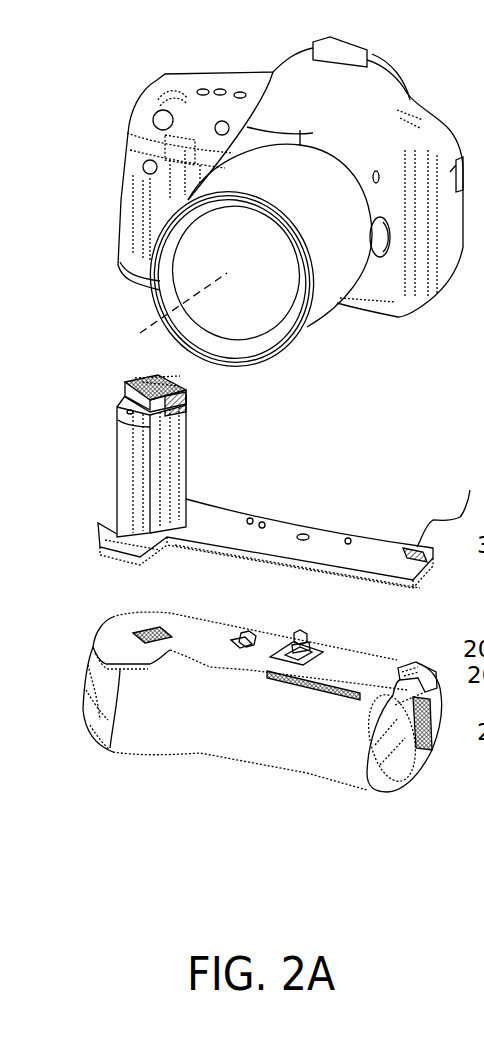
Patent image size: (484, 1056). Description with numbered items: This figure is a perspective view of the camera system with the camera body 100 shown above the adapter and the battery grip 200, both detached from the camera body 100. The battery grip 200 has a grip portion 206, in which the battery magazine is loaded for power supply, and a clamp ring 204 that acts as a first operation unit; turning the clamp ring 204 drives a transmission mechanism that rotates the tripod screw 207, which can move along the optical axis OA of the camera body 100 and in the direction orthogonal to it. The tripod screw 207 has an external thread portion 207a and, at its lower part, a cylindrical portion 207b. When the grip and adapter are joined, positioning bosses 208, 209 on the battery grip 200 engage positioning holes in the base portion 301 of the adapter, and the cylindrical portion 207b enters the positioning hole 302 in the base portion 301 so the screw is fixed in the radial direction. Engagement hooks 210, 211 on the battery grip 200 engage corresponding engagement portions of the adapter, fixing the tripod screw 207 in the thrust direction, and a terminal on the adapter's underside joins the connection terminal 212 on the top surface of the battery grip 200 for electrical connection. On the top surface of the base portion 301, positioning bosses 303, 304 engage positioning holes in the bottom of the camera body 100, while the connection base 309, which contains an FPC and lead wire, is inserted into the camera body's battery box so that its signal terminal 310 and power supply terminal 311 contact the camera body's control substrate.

The camera body 100 is at (184, 68).
The optical axis OA is at (143, 333).
The battery grip 200 is at (113, 745).
The clamp ring 204 is at (310, 693).
The grip portion 206 is at (283, 753).
The tripod screw 207 is at (307, 637).
The external thread portion 207a is at (303, 627).
The cylindrical portion 207b is at (273, 673).
The positioning boss 208 is at (435, 753).
The positioning boss 209 is at (243, 640).
The engagement hook 210 is at (243, 630).
The engagement hook 211 is at (410, 660).
The connection terminal 212 is at (150, 630).
The base portion 301 is at (250, 552).
The positioning hole 302 is at (310, 530).
The positioning boss 303 is at (350, 537).
The positioning boss 304 is at (260, 520).
The connection base 309 is at (130, 457).
The signal terminal 310 is at (143, 393).
The power supply terminal 311 is at (186, 405).